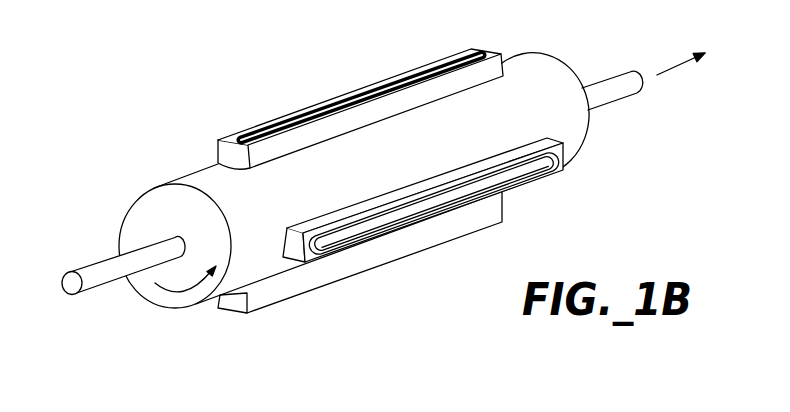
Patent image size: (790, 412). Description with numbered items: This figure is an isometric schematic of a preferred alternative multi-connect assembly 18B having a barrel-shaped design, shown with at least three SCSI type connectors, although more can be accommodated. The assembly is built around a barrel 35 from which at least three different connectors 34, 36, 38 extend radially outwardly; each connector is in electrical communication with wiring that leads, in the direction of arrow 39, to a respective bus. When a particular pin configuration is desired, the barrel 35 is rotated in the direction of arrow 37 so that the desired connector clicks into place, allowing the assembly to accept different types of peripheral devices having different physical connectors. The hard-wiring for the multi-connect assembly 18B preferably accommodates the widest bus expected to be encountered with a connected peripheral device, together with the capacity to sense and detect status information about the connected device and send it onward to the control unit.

The multi-connect assembly 18B is at (381, 174).
The connector 34 is at (488, 53).
The barrel 35 is at (537, 65).
The connector 36 is at (558, 152).
The rotation arrow 37 is at (172, 293).
The connector 38 is at (258, 310).
The wiring lead arrow 39 is at (670, 65).